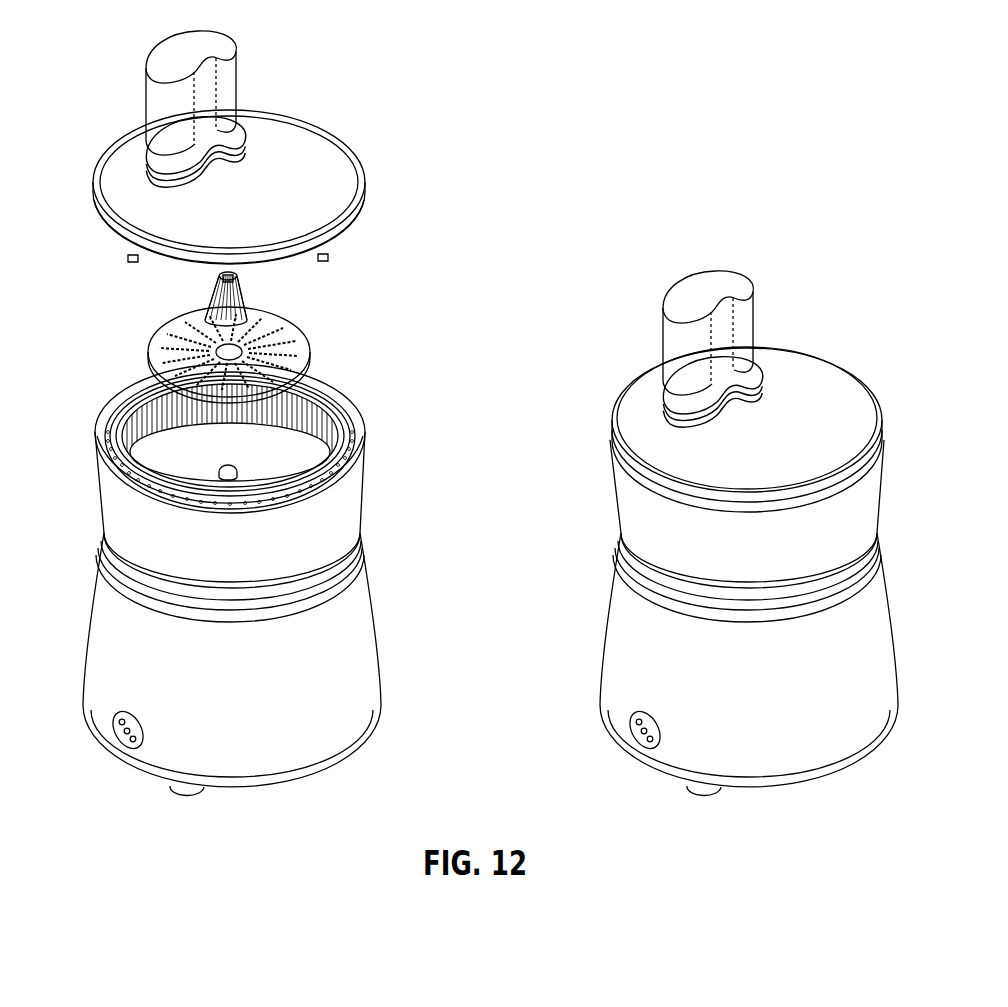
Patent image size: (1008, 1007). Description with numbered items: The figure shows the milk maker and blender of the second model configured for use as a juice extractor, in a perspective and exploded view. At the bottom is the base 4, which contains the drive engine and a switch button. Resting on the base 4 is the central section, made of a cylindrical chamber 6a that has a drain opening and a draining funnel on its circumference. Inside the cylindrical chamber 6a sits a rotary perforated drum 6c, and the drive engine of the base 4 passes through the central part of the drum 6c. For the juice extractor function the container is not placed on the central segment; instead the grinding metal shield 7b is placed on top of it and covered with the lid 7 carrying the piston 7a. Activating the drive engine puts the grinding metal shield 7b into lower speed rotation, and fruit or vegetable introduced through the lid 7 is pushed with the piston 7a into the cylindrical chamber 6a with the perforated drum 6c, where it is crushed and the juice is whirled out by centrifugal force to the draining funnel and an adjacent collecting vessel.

The base 4 is at (362, 635).
The cylindrical chamber 6a is at (353, 487).
The rotary perforated drum 6c is at (135, 457).
The lid 7 is at (318, 142).
The piston 7a is at (223, 82).
The grinding metal shield 7b is at (300, 342).